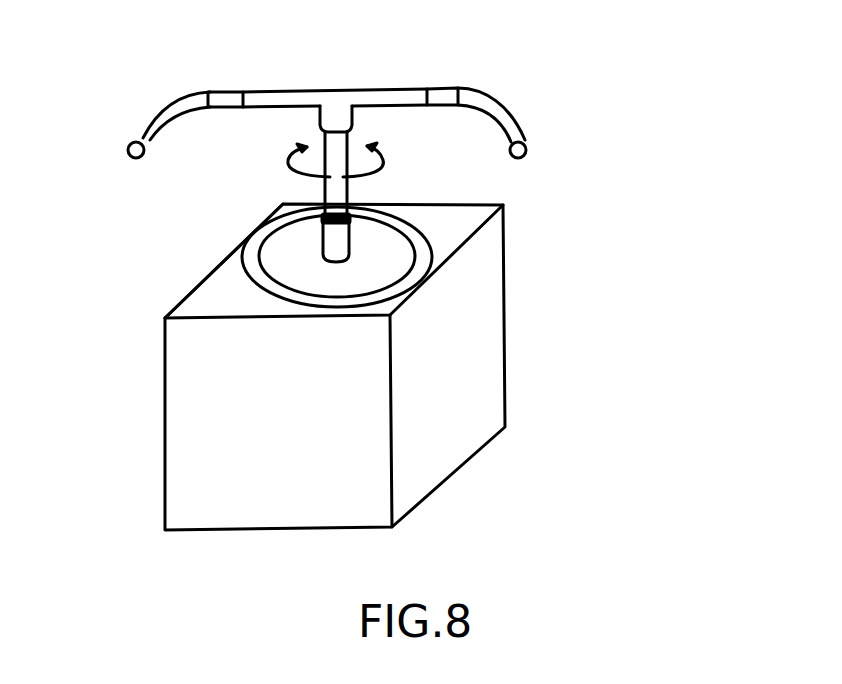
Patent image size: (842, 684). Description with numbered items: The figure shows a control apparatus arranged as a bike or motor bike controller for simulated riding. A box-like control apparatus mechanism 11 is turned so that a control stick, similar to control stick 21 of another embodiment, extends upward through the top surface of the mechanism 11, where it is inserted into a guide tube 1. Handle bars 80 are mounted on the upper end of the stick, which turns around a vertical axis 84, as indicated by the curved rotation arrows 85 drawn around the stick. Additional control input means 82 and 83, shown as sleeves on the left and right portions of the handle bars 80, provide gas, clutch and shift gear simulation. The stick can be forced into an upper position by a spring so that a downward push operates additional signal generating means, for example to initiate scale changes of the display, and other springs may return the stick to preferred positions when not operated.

The guide tube 1 is at (330, 238).
The control apparatus mechanism 11 is at (180, 420).
The control stick 21 is at (333, 194).
The handle bars 80 is at (530, 132).
The additional control input means 82 is at (233, 96).
The additional control input means 83 is at (446, 92).
The vertical axis 84 is at (351, 113).
The rotation arrows 85 is at (380, 162).